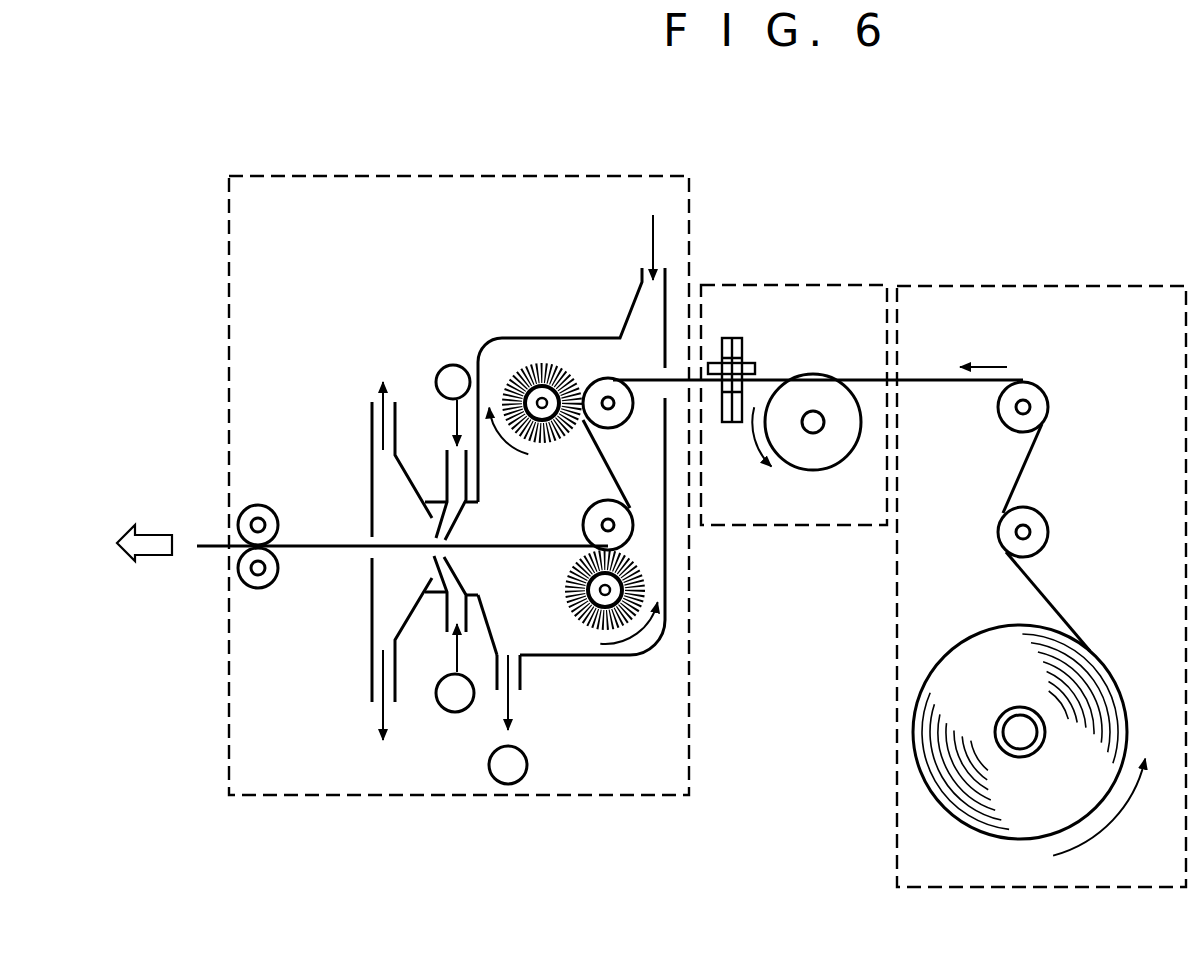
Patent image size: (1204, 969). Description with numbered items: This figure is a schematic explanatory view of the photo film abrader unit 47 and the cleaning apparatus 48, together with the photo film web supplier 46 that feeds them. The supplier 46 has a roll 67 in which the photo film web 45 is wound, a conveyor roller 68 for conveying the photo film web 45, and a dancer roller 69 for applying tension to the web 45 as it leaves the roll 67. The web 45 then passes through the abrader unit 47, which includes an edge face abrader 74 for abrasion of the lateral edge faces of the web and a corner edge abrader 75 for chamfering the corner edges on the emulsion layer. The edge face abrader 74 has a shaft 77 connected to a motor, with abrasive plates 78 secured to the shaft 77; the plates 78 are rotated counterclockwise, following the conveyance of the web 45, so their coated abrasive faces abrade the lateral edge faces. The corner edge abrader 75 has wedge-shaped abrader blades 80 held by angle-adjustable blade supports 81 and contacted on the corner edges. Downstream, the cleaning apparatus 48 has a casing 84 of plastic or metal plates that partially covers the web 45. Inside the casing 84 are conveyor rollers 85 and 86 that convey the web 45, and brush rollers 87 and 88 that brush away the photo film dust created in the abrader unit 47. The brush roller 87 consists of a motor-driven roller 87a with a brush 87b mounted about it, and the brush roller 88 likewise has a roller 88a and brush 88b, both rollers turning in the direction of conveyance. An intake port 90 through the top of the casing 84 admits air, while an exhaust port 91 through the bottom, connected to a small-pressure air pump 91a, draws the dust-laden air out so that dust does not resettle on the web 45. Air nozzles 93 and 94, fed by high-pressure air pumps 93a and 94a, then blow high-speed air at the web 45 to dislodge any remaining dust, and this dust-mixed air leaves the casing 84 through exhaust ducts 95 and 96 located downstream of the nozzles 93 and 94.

The photo film web 45 is at (315, 550).
The photo film web supplier 46 is at (1000, 276).
The photo film abrader unit 47 is at (735, 275).
The cleaning apparatus 48 is at (474, 166).
The roll 67 is at (968, 648).
The conveyor roller 68 is at (1043, 404).
The dancer roller 69 is at (1043, 537).
The edge face abrader 74 is at (864, 396).
The corner edge abrader 75 is at (737, 335).
The shaft 77 is at (816, 410).
The abrasive plates 78 is at (832, 441).
The abrader blades 80 is at (730, 425).
The blade supports 81 is at (742, 352).
The casing 84 is at (649, 659).
The conveyor roller 85 is at (626, 428).
The conveyor roller 86 is at (590, 522).
The brush roller 87 is at (560, 380).
The roller 87a is at (578, 381).
The brush 87b is at (520, 370).
The brush roller 88 is at (572, 587).
The roller 88a is at (646, 588).
The brush 88b is at (595, 616).
The intake port 90 is at (640, 270).
The exhaust port 91 is at (522, 680).
The air pump 91a is at (528, 765).
The air nozzle 93 is at (447, 456).
The high-pressure air pump 93a is at (437, 376).
The air nozzle 94 is at (458, 568).
The high-pressure air pump 94a is at (445, 713).
The exhaust duct 95 is at (368, 460).
The exhaust duct 96 is at (372, 636).